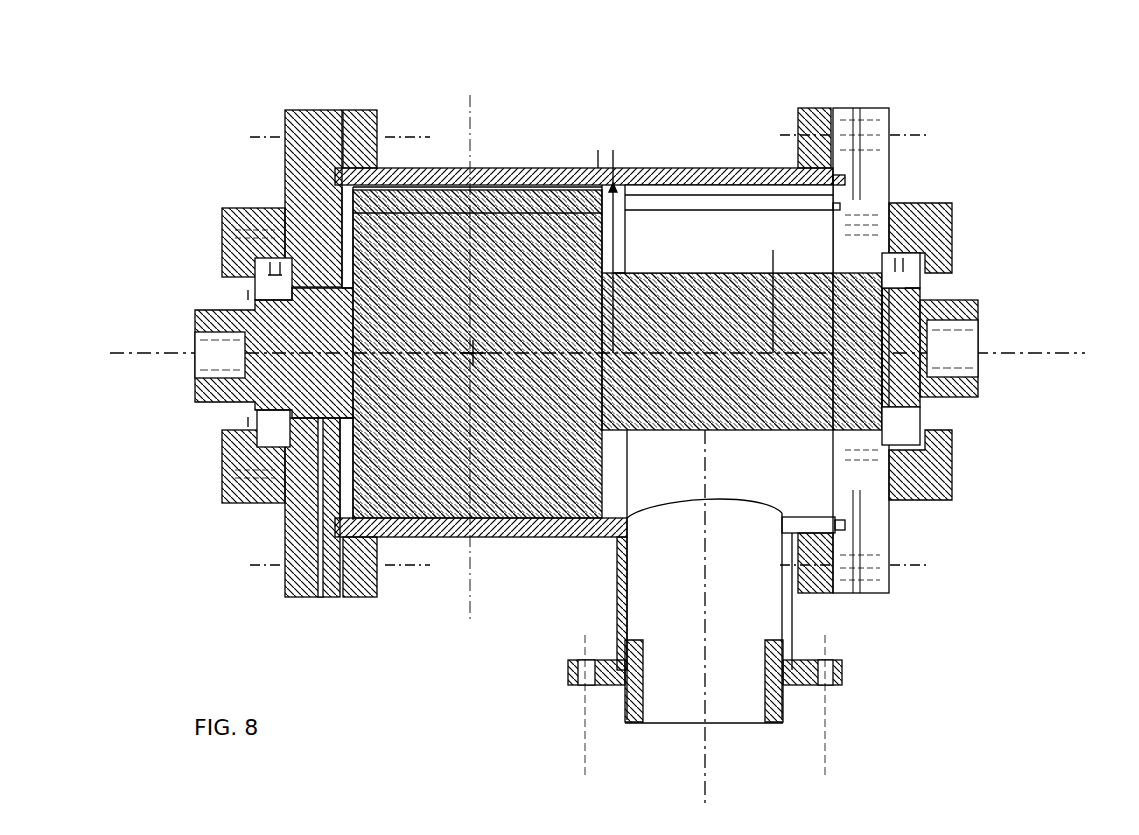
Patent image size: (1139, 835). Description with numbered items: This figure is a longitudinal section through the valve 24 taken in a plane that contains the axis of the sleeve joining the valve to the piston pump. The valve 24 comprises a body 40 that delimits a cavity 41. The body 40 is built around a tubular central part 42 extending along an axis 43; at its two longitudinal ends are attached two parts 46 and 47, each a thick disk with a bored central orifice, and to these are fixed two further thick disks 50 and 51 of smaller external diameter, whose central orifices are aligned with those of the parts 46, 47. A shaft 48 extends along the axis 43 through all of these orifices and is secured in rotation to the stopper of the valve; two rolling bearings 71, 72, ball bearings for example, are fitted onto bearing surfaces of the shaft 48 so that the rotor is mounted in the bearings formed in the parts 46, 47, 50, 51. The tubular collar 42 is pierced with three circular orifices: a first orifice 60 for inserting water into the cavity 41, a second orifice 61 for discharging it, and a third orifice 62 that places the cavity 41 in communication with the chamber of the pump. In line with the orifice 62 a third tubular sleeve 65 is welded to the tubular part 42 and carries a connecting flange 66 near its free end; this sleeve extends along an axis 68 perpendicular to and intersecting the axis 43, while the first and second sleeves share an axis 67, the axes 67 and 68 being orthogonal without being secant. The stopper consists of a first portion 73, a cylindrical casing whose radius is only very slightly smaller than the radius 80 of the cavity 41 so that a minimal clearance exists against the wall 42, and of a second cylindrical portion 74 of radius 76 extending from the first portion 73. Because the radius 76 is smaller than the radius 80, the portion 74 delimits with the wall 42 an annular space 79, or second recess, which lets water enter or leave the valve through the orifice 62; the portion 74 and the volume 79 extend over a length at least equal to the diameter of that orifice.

The valve 24 is at (1018, 152).
The body 40 is at (600, 166).
The cavity 41 is at (717, 229).
The tubular central part 42 is at (688, 168).
The axis 43 is at (1042, 352).
The part 46 is at (312, 125).
The part 47 is at (873, 177).
The shaft 48 is at (215, 312).
The part 50 is at (249, 222).
The part 51 is at (930, 232).
The first orifice 60 is at (504, 428).
The second orifice 61 is at (477, 200).
The third orifice 62 is at (632, 518).
The third tubular sleeve 65 is at (793, 632).
The connecting flange 66 is at (846, 672).
The axis 67 is at (468, 357).
The axis 68 is at (708, 775).
The rolling bearing 71 is at (274, 281).
The rolling bearing 72 is at (905, 283).
The first portion 73 is at (437, 515).
The second cylindrical portion 74 is at (694, 400).
The radius 76 is at (774, 272).
The annular space 79 is at (732, 202).
The radius 80 is at (616, 150).